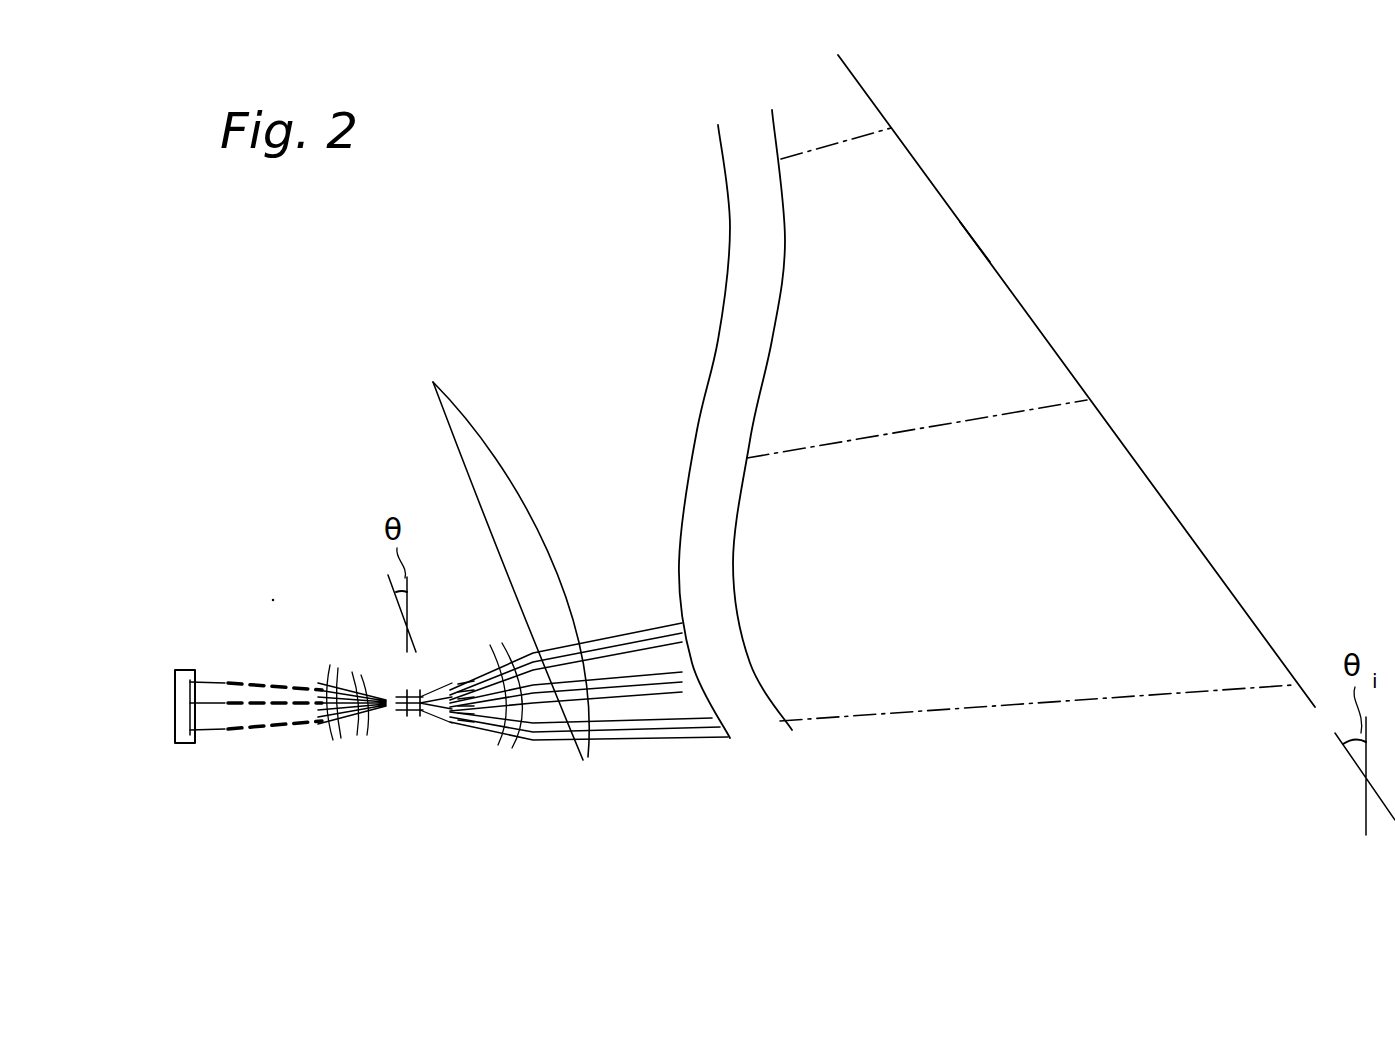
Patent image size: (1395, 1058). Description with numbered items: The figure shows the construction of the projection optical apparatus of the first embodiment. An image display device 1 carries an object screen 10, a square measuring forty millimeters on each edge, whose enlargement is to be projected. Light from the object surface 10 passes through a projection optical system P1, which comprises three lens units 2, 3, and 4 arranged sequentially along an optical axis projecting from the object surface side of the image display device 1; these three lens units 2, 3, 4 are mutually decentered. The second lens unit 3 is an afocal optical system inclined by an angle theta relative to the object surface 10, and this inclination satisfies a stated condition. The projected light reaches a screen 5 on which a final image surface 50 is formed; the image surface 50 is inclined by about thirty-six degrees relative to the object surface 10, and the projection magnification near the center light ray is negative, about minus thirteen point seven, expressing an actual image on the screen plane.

The image display device 1 is at (183, 746).
The object screen 10 is at (190, 712).
The first lens unit 2 is at (312, 766).
The second lens unit 3 is at (352, 751).
The third lens unit 4 is at (543, 782).
The screen 5 is at (850, 74).
The final image surface 50 is at (978, 248).
The projection optical system P1 is at (273, 600).